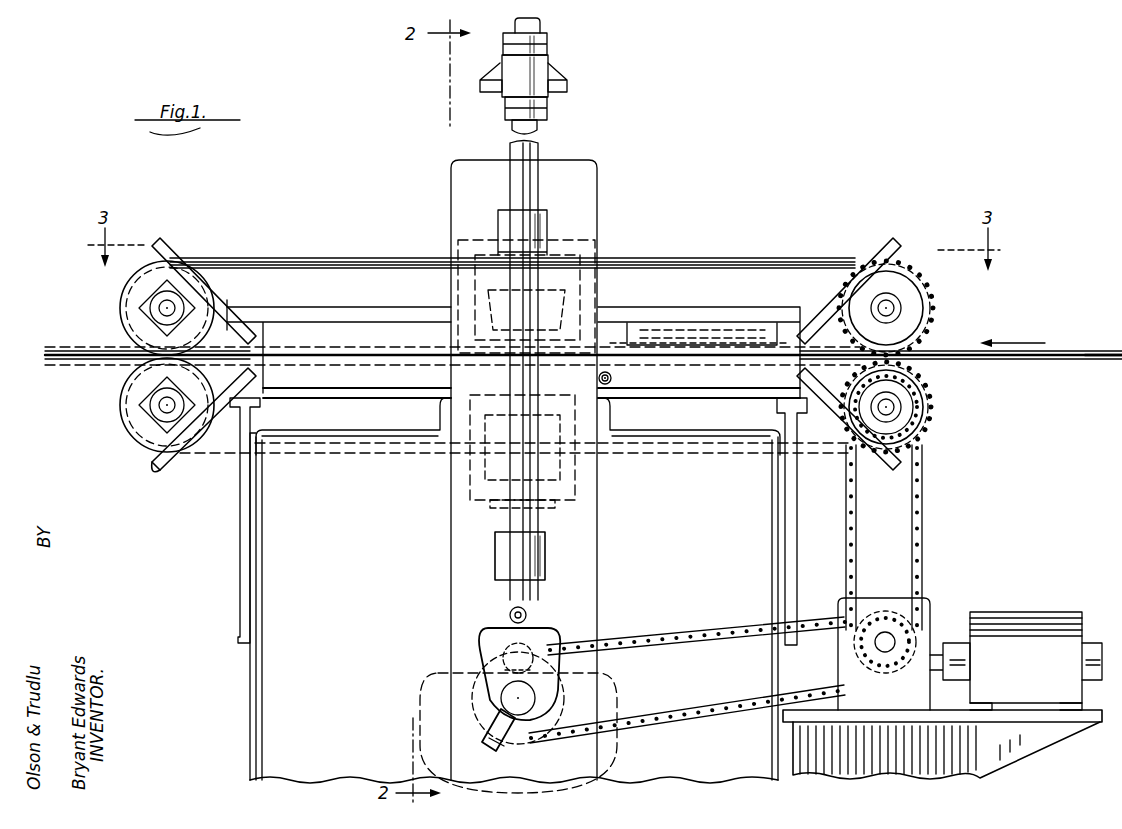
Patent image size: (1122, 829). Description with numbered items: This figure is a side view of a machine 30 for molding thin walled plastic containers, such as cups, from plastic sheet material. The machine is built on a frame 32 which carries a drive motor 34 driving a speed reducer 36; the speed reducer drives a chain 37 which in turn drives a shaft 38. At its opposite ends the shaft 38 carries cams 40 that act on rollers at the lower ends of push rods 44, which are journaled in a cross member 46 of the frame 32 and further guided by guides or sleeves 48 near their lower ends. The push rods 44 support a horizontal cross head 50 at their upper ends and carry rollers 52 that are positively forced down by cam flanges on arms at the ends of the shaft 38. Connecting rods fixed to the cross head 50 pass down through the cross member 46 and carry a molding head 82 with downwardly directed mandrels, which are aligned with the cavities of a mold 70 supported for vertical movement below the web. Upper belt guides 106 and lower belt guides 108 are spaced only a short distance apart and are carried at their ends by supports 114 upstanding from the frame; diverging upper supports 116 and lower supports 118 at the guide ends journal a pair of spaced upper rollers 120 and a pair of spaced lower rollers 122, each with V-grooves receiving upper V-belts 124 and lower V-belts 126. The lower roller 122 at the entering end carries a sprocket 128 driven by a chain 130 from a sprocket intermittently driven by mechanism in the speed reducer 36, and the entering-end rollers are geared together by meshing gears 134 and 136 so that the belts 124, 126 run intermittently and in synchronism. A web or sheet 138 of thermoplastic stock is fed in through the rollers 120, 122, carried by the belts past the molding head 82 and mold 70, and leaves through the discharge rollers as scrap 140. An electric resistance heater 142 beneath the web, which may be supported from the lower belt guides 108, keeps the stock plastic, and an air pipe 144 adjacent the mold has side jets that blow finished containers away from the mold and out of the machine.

The machine 30 is at (420, 218).
The frame 32 is at (270, 560).
The drive motor 34 is at (1080, 612).
The speed reducer 36 is at (932, 598).
The chain 37 is at (740, 712).
The shaft 38 is at (520, 698).
The cams 40 is at (497, 648).
The push rods 44 is at (515, 388).
The cross member 46 is at (580, 170).
The guides or sleeves 48 is at (497, 560).
The cross head 50 is at (567, 86).
The rollers 52 is at (510, 616).
The mold 70 is at (470, 472).
The molding head 82 is at (470, 287).
The upper belt guides 106 is at (760, 330).
The lower belt guides 108 is at (707, 380).
The supports 114 is at (240, 520).
The upper supports 116 is at (240, 282).
The lower supports 118 is at (160, 466).
The upper rollers 120 is at (145, 305).
The lower rollers 122 is at (140, 390).
The upper V-belts 124 is at (778, 262).
The lower V-belts 126 is at (836, 470).
The sprocket 128 is at (912, 428).
The chain 130 is at (922, 512).
The gear 134 is at (940, 306).
The gear 136 is at (925, 395).
The web or sheet 138 is at (1101, 362).
The scrap 140 is at (93, 352).
The electric resistance heater 142 is at (700, 342).
The air pipe 144 is at (612, 390).